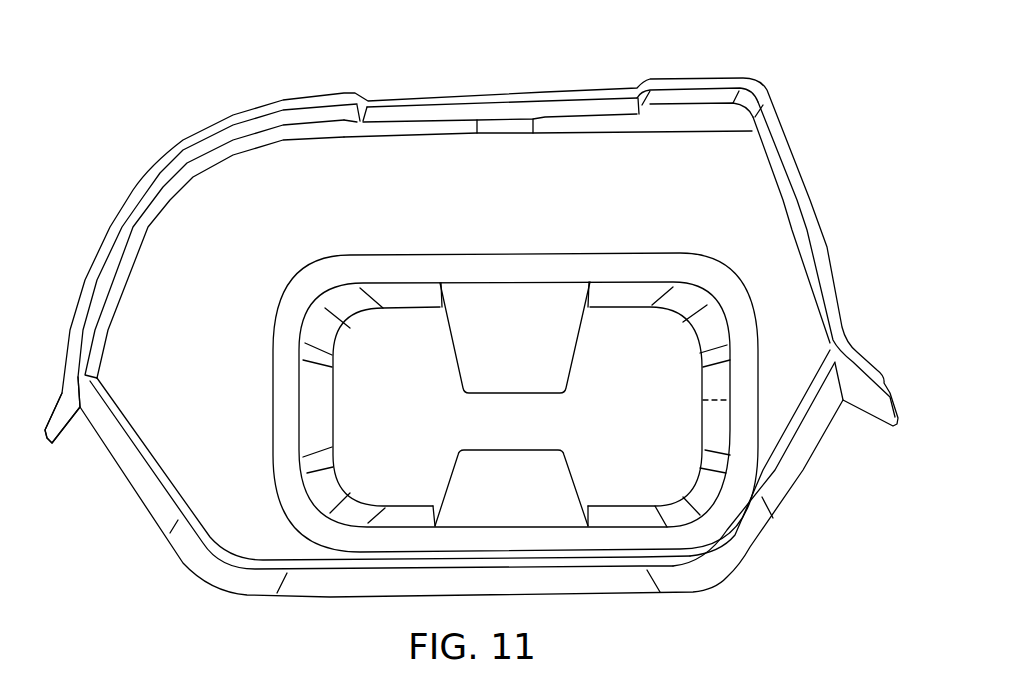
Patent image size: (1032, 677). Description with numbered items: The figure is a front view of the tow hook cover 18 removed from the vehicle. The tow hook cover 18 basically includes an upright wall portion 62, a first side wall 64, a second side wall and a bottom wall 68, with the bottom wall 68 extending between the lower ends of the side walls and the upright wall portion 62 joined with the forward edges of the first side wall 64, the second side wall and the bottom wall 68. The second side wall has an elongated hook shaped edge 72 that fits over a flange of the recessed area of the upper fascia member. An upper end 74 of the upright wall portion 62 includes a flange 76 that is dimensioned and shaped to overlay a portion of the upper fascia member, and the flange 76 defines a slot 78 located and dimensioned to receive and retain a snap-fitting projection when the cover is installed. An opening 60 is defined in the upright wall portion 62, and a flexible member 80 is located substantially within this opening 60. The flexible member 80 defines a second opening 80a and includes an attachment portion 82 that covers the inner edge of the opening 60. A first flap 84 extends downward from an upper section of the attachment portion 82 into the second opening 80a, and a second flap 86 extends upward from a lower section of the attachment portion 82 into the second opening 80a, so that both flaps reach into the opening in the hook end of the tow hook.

The tow hook cover 18 is at (747, 54).
The opening 60 is at (695, 399).
The upright wall portion 62 is at (733, 170).
The first side wall 64 is at (798, 455).
The bottom wall 68 is at (575, 580).
The hook shaped edge 72 is at (60, 423).
The upper end 74 is at (437, 162).
The flange 76 is at (674, 96).
The slot 78 is at (517, 134).
The flexible member 80 is at (623, 245).
The second opening 80a is at (690, 338).
The attachment portion 82 is at (720, 302).
The first flap 84 is at (493, 357).
The second flap 86 is at (477, 480).